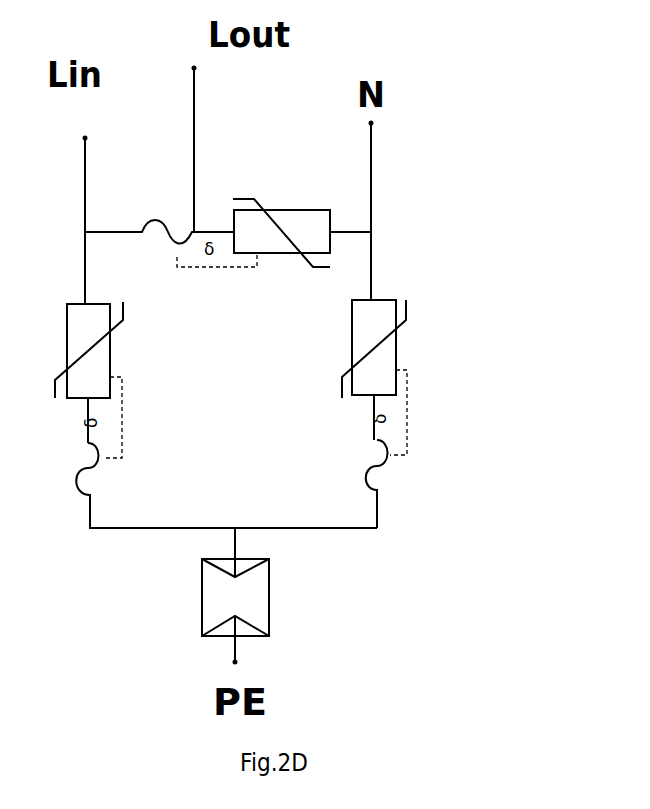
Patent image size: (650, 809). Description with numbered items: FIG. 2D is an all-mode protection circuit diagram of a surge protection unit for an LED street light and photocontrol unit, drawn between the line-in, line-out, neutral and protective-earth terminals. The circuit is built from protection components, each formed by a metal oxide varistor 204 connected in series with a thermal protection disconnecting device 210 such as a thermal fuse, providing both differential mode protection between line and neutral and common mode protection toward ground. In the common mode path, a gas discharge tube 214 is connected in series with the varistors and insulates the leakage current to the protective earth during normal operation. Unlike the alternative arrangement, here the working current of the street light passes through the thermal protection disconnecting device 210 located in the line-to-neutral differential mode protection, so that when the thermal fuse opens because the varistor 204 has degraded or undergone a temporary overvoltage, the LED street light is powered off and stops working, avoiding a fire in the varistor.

The varistor 204 is at (382, 342).
The thermal disconnect 210 is at (387, 475).
The gas discharge tube 214 is at (253, 595).